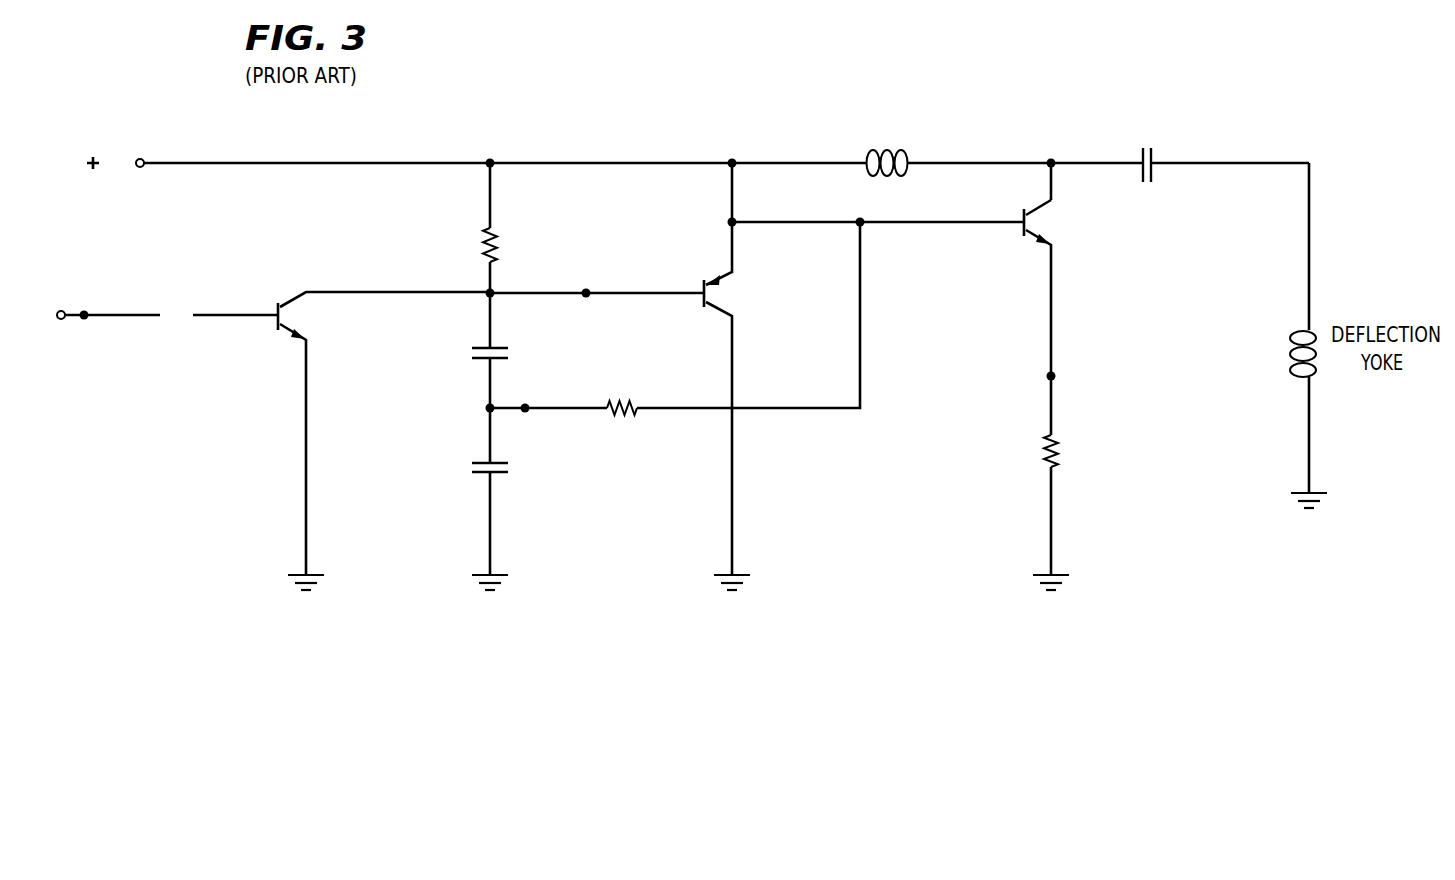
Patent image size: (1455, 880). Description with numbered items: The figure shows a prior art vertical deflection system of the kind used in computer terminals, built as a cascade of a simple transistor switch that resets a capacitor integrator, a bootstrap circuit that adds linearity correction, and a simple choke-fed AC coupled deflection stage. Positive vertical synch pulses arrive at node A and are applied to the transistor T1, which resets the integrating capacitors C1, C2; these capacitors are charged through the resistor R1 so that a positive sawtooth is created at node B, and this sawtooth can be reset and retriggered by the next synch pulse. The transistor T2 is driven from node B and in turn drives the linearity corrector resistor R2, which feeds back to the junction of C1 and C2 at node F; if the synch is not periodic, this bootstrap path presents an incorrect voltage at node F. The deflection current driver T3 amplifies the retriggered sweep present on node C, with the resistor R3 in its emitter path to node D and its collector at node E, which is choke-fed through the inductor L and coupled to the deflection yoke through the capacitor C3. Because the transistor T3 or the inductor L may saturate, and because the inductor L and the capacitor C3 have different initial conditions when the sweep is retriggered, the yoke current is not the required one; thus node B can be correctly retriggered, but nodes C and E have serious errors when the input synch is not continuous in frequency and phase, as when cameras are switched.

The node A is at (84, 318).
The node B is at (586, 290).
The node C is at (860, 218).
The node D (emitter of T3) D is at (1053, 376).
The node E is at (1051, 160).
The node F is at (525, 410).
The transistor T1 is at (384, 441).
The transistor T2 is at (782, 376).
The deflection current driver T3 is at (1055, 317).
The resistor R1 is at (511, 255).
The linearity corrector resistor R2 is at (733, 318).
The resistor R3 is at (1065, 512).
The integrating capacitor C1 is at (508, 400).
The integrating capacitor C2 is at (512, 526).
The capacitor C3 is at (1149, 143).
The inductor L is at (887, 145).